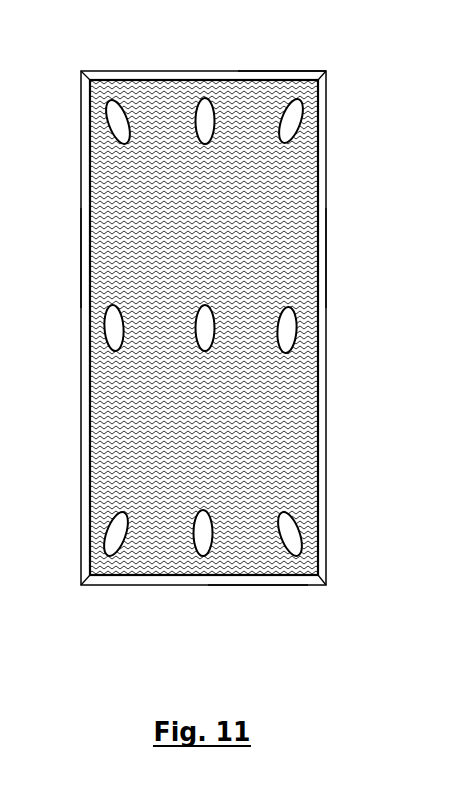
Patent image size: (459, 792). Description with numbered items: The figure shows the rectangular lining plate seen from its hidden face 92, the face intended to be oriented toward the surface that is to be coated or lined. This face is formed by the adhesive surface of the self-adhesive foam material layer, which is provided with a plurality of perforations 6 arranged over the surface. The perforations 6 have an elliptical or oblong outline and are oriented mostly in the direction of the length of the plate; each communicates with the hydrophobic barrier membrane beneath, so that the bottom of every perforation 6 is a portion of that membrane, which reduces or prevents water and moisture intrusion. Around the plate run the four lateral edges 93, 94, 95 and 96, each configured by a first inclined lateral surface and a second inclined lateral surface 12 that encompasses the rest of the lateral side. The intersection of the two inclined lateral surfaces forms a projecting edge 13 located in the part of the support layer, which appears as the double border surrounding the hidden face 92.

The perforations 6 is at (107, 322).
The second inclined lateral surface 12 is at (140, 72).
The edge 13 is at (187, 63).
The hidden face 92 is at (256, 420).
The lateral edge 93 is at (335, 260).
The lateral edge 94 is at (54, 239).
The lateral edge 95 is at (256, 598).
The lateral edge 96 is at (261, 32).